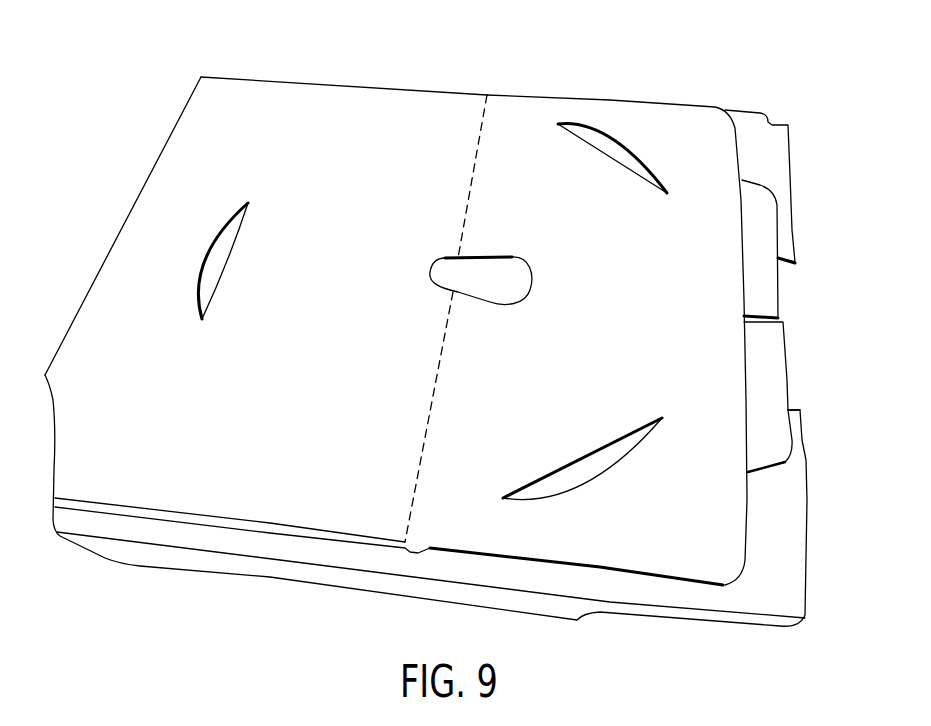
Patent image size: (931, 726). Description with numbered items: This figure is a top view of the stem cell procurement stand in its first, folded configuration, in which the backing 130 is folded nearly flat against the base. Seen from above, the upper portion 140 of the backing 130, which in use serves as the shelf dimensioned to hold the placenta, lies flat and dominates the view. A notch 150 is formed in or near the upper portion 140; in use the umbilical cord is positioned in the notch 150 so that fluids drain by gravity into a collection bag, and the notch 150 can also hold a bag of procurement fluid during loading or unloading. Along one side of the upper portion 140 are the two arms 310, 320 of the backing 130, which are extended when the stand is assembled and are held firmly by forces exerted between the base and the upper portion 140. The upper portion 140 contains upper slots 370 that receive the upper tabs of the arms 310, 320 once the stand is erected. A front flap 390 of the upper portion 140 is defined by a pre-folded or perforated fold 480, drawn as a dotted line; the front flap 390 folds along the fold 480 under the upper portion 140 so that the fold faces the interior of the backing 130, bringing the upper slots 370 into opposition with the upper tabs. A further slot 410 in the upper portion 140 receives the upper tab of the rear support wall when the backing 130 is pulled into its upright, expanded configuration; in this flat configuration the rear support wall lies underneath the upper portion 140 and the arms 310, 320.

The backing 130 is at (220, 101).
The upper portion 140 is at (339, 137).
The notch 150 is at (492, 253).
The arm 310 is at (770, 240).
The arm 320 is at (770, 363).
The upper slots 370 is at (622, 138).
The front flap 390 is at (643, 316).
The slot 410 is at (199, 297).
The fold 480 is at (438, 377).